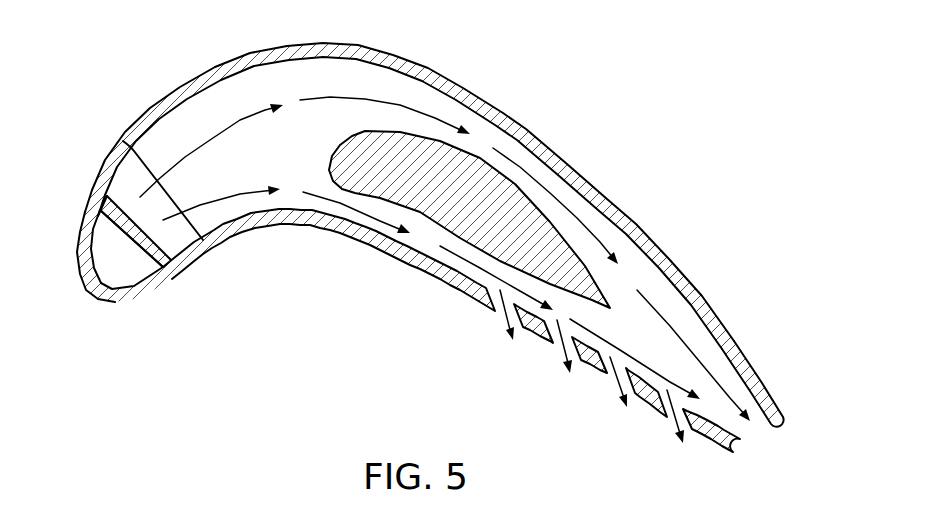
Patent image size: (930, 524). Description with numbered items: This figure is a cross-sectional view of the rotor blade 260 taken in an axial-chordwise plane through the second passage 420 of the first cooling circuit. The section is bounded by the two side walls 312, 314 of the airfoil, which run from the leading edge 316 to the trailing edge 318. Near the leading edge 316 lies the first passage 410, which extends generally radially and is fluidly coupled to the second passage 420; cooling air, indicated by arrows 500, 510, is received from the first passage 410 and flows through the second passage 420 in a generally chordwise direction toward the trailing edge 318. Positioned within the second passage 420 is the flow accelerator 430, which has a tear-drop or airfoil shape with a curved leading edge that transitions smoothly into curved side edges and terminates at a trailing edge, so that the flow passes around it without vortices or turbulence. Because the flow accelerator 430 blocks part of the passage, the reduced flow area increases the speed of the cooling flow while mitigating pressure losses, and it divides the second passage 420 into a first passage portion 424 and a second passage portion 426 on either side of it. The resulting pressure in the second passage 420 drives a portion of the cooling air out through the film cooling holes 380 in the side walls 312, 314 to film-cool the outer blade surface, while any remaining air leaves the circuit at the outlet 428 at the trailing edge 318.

The rotor blade 260 is at (409, 187).
The side wall 314 is at (312, 44).
The trailing edge 318 is at (767, 434).
The second passage portion 426 is at (563, 192).
The side wall 312 is at (277, 225).
The first passage portion 424 is at (463, 271).
The film cooling holes 380 is at (500, 310).
The outlet 428 is at (748, 434).
The leading edge 316 is at (78, 290).
The first passage 410 is at (173, 243).
The flow accelerator 430 is at (343, 163).
The second passage 420 is at (380, 80).
The arrows indicating cooling air 510 is at (433, 117).
The arrows indicating cooling air 500 is at (380, 214).